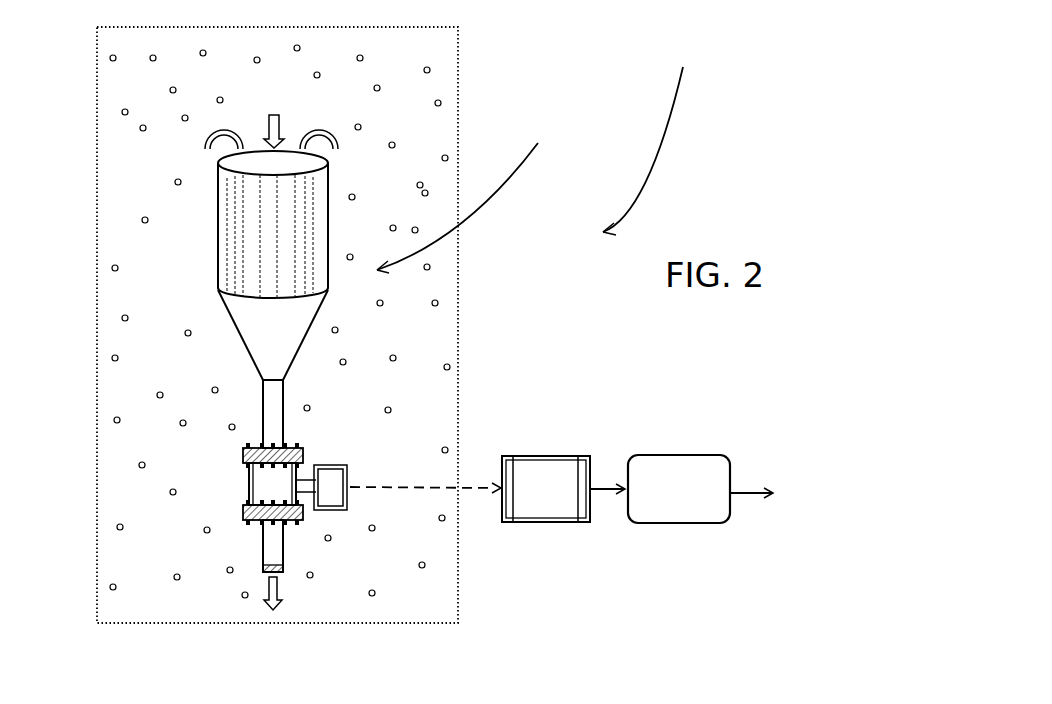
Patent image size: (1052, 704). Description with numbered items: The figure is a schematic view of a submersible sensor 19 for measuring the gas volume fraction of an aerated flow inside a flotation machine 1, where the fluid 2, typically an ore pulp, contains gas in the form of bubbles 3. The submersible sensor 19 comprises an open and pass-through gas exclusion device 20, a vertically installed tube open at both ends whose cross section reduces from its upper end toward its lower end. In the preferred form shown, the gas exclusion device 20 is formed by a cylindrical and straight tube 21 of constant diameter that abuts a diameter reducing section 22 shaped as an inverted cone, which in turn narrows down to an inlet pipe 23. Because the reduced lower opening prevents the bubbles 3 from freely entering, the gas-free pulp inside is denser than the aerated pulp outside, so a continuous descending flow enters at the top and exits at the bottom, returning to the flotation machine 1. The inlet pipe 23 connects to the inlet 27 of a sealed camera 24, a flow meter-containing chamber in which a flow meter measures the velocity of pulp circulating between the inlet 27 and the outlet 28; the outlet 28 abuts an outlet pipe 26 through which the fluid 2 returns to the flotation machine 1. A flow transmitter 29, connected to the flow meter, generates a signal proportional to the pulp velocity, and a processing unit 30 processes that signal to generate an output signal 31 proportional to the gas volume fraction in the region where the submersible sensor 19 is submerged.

The flotation machine 1 is at (326, 364).
The fluid 2 is at (292, 625).
The bubbles 3 is at (418, 563).
The submersible sensor 19 is at (648, 139).
The gas exclusion device 20 is at (462, 197).
The cylindrical tube 21 is at (290, 195).
The diameter reducing section 22 is at (280, 325).
The inlet pipe 23 is at (277, 415).
The sealed camera 24 is at (232, 574).
The outlet pipe 26 is at (235, 603).
The inlet 27 is at (255, 433).
The outlet 28 is at (322, 596).
The flow transmitter 29 is at (535, 482).
The processing unit 30 is at (668, 482).
The output signal 31 is at (752, 495).